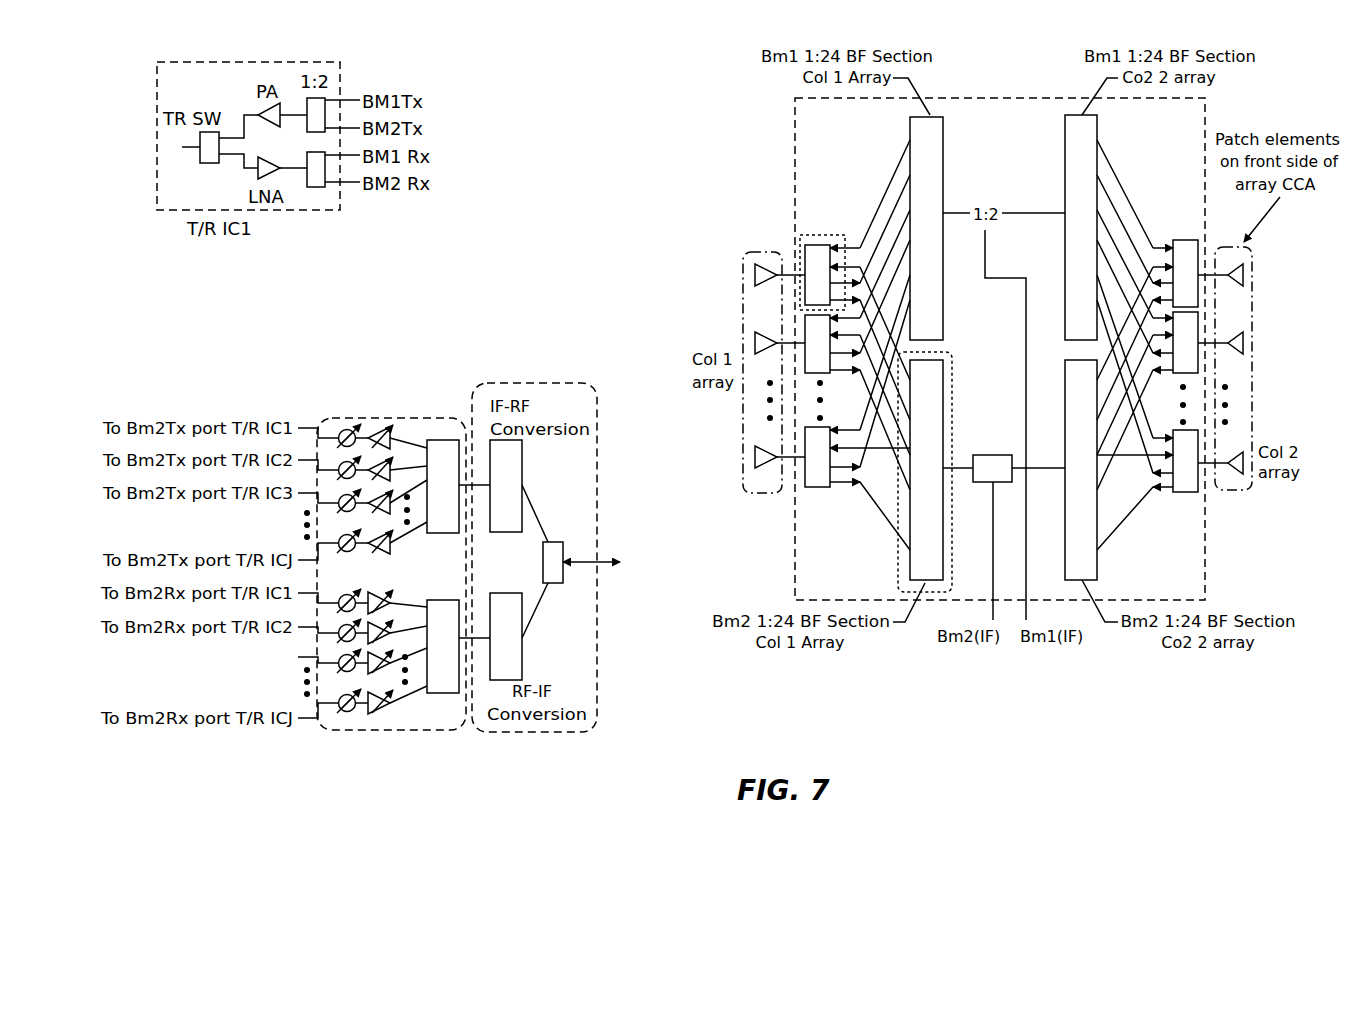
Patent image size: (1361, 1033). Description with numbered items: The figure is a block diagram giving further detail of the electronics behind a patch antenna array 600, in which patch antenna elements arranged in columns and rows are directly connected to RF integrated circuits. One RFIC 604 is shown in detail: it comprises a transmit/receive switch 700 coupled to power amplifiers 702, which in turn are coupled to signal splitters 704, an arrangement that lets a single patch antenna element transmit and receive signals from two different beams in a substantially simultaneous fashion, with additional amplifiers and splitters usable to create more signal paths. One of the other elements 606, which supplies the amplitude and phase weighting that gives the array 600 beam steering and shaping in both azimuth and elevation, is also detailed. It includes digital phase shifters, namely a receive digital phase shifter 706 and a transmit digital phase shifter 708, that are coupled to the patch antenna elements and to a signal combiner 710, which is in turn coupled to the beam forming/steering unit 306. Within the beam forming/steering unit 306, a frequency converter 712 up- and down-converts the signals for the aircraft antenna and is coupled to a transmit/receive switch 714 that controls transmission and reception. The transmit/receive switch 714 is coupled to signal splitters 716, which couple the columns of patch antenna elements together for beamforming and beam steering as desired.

The beam forming/steering unit 306 is at (552, 383).
The array 600 is at (743, 303).
The RF integrated circuit 604 is at (215, 62).
The other element 606 is at (337, 418).
The transmit/receive switch 700 is at (200, 152).
The power amplifier 702 is at (258, 173).
The signal splitter 704 is at (317, 187).
The receive digital phase shifter 706 is at (360, 725).
The transmit digital phase shifter 708 is at (372, 418).
The signal combiner 710 is at (443, 440).
The frequency converter 712 is at (522, 532).
The transmit/receive switch 714 is at (563, 588).
The signal splitter 716 is at (990, 455).